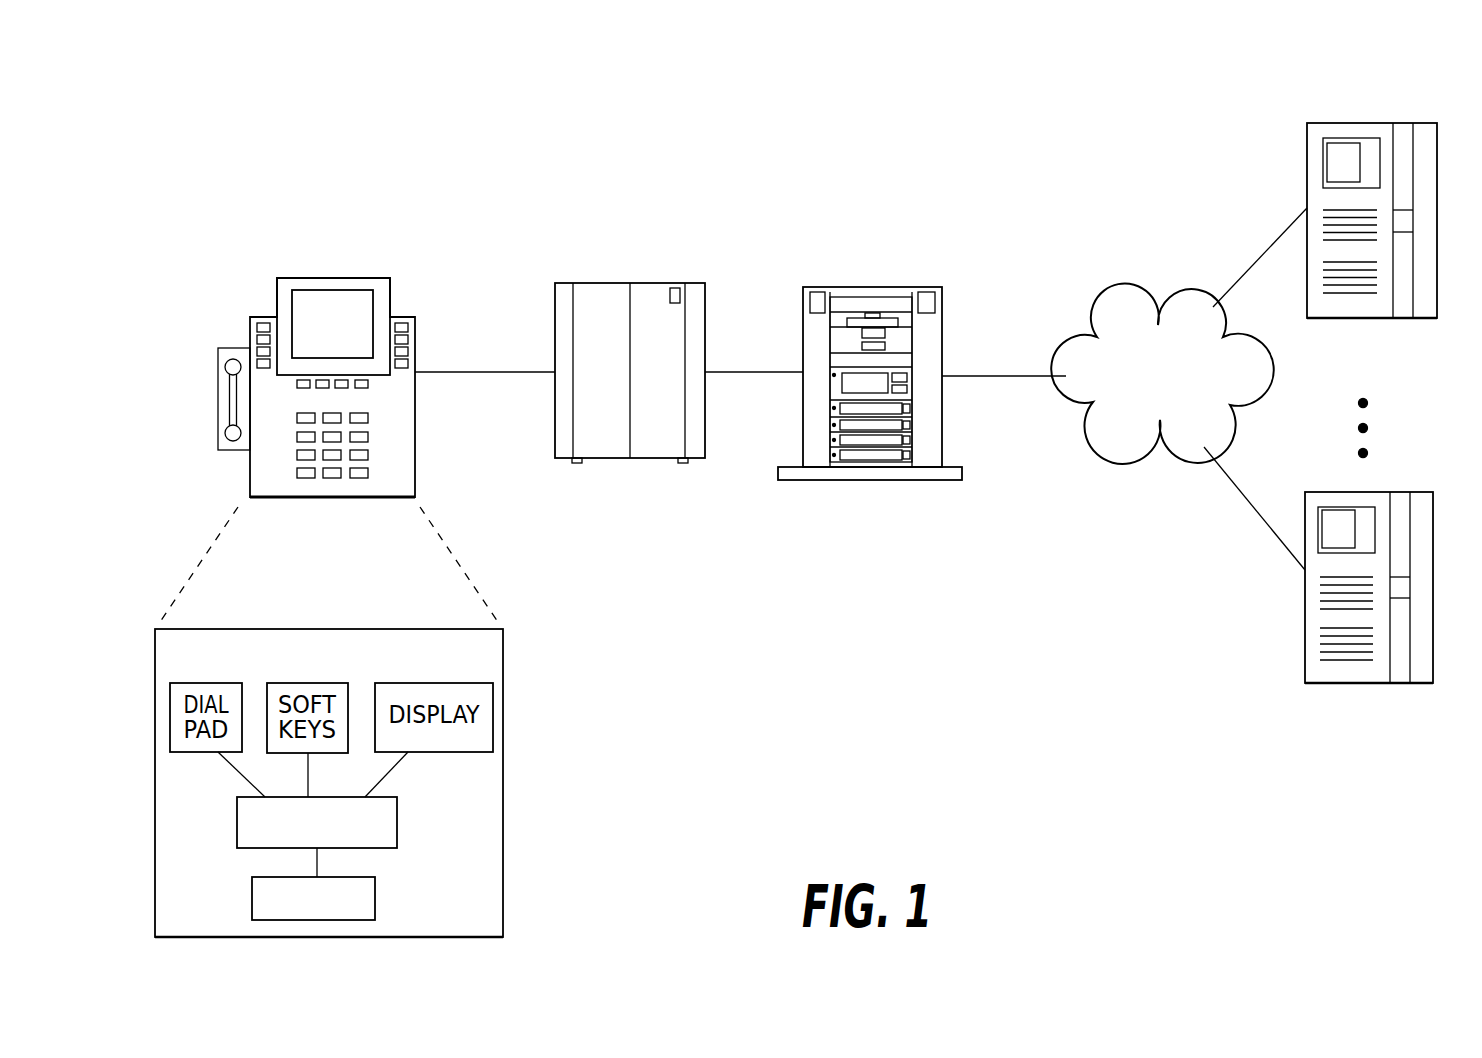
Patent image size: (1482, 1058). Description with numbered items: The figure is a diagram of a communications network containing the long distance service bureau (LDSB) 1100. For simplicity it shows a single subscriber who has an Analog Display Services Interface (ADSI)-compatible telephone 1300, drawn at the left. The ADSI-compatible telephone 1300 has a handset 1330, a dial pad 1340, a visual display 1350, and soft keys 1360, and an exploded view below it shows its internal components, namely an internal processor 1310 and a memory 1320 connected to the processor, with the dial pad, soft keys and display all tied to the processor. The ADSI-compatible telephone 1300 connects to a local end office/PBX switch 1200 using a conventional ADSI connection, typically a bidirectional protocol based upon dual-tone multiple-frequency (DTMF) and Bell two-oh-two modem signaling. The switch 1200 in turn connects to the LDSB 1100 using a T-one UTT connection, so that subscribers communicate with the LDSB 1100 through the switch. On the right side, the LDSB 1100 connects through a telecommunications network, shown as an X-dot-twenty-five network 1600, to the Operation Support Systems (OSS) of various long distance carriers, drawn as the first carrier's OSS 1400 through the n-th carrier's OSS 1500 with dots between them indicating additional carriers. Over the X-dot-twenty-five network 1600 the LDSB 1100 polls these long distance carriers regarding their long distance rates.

The long distance service bureau 1100 is at (868, 287).
The switch 1200 is at (627, 283).
The ADSI-compatible telephone 1300 is at (321, 380).
The internal processor 1310 is at (397, 820).
The memory 1320 is at (375, 900).
The handset 1330 is at (230, 407).
The dial pad 1340 is at (360, 469).
The visual display 1350 is at (345, 282).
The soft keys 1360 is at (397, 353).
The carrier 1 OSS 1400 is at (1437, 157).
The carrier n OSS 1500 is at (1433, 533).
The X.25 network 1600 is at (1125, 297).